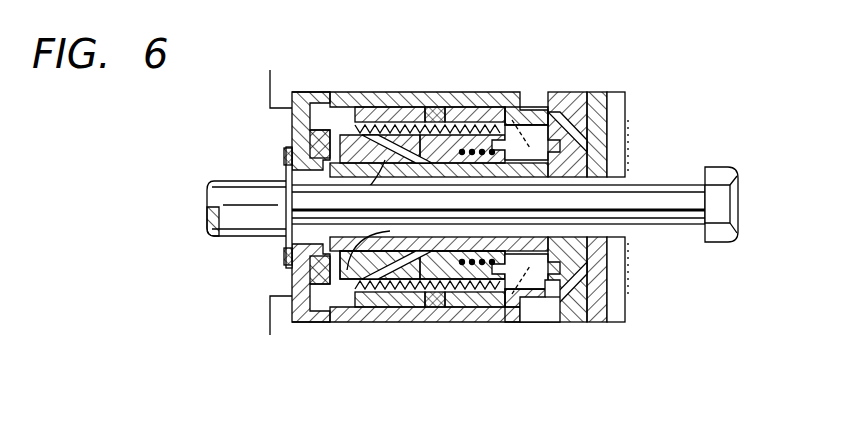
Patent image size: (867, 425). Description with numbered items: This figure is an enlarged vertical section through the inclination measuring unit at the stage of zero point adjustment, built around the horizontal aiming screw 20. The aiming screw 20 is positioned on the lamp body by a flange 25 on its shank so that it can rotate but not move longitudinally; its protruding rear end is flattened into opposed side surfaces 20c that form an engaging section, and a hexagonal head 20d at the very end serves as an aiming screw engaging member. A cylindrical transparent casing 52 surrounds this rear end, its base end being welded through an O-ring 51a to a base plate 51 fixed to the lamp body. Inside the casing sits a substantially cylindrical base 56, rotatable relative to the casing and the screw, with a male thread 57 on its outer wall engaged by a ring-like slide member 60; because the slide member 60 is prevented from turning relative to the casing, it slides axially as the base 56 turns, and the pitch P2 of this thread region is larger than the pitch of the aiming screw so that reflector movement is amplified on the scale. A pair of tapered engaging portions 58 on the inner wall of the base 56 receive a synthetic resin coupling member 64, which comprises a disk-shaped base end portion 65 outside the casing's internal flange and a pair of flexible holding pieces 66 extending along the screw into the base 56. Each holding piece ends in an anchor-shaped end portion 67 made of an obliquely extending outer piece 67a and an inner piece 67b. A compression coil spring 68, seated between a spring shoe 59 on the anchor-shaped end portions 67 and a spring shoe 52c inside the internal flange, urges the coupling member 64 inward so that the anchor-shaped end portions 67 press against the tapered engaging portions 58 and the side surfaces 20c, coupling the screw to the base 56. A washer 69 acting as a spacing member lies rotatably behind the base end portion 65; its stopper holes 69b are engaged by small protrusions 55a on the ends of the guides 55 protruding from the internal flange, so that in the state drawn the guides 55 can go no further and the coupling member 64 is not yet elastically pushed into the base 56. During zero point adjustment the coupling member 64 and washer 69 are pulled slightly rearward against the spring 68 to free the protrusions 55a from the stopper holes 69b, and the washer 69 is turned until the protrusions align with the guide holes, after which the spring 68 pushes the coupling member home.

The horizontal aiming screw 20 is at (695, 170).
The side surfaces 20c is at (636, 185).
The hexagonal head 20d is at (739, 195).
The flange 25 is at (283, 168).
The base plate 51 is at (313, 143).
The O-ring 51a is at (298, 93).
The transparent casing 52 is at (448, 95).
The spring shoe 52c is at (506, 315).
The guides 55 is at (535, 300).
The small protrusions 55a is at (562, 316).
The base 56 is at (333, 108).
The male thread 57 is at (378, 120).
The tapered engaging portions 58 is at (262, 237).
The spring shoe 59 is at (432, 320).
The slide member 60 is at (422, 110).
The coupling member 64 is at (590, 93).
The base end portion 65 is at (618, 113).
The flexible holding pieces 66 is at (508, 112).
The anchor-shaped end portions 67 is at (420, 376).
The outer piece 67a is at (363, 320).
The inner piece 67b is at (400, 320).
The compression coil spring 68 is at (468, 125).
The washer 69 is at (566, 96).
The stopper holes 69b is at (520, 118).
The pitch of the thread region P2 is at (470, 320).